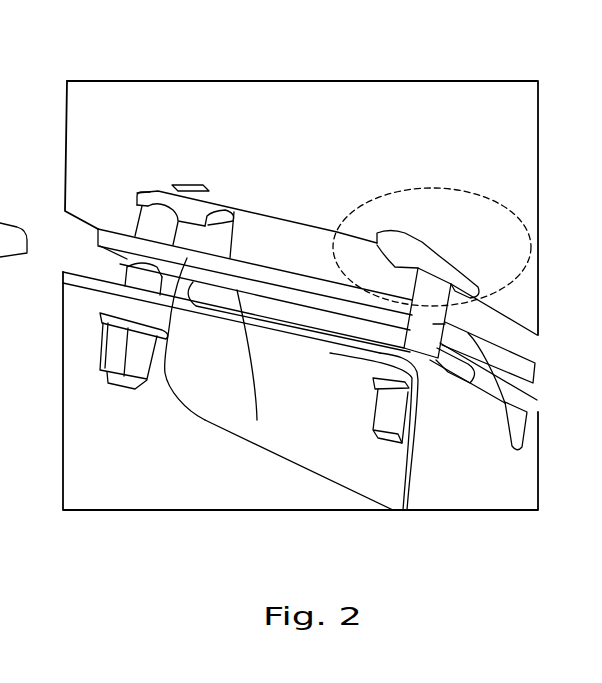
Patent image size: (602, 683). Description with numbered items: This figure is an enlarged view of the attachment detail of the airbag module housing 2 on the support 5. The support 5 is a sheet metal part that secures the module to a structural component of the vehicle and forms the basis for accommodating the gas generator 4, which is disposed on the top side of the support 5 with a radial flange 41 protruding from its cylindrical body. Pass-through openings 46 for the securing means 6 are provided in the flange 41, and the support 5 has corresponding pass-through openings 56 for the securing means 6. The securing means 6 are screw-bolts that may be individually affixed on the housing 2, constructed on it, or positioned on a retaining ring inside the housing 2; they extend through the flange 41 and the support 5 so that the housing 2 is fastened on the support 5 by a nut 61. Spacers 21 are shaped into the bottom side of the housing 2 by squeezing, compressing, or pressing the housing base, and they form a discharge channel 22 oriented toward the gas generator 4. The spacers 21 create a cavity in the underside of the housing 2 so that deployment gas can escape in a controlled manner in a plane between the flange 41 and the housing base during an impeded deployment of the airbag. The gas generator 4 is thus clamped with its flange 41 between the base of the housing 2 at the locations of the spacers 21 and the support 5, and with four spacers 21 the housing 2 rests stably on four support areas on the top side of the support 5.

The housing 2 is at (153, 128).
The spacers 21 is at (132, 192).
The discharge channel 22 is at (251, 232).
The securing means 6 is at (140, 278).
The nut 61 is at (118, 352).
The support 5 is at (97, 415).
The pass-through openings 46 is at (197, 290).
The flange 41 is at (257, 420).
The gas generator 4 is at (323, 453).
The pass-through openings 56 is at (413, 483).